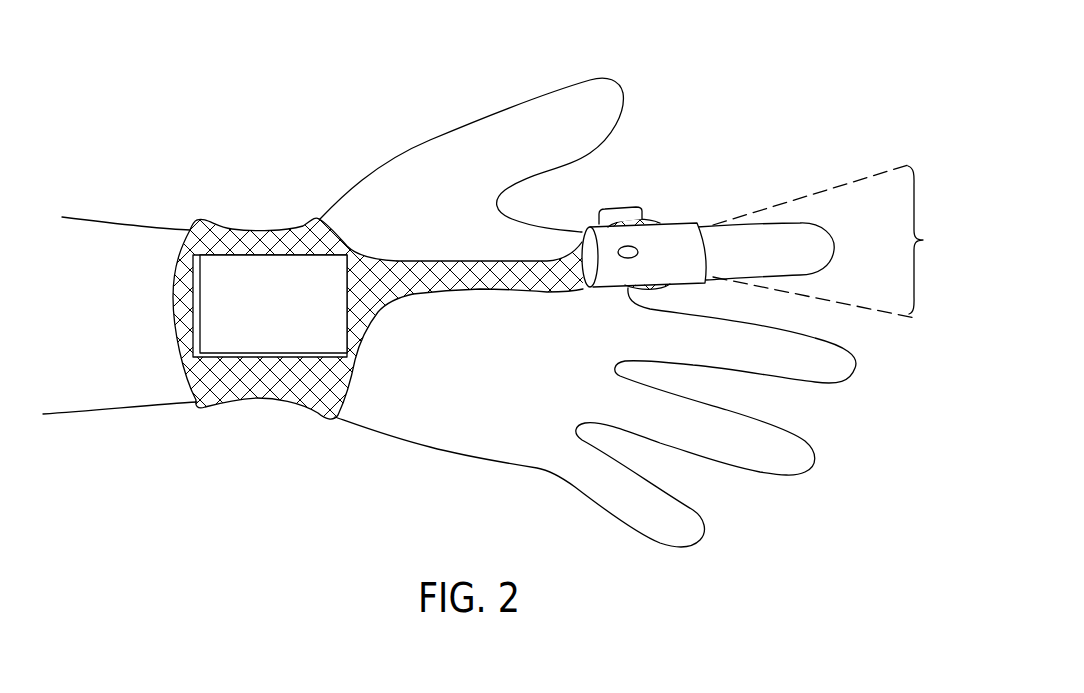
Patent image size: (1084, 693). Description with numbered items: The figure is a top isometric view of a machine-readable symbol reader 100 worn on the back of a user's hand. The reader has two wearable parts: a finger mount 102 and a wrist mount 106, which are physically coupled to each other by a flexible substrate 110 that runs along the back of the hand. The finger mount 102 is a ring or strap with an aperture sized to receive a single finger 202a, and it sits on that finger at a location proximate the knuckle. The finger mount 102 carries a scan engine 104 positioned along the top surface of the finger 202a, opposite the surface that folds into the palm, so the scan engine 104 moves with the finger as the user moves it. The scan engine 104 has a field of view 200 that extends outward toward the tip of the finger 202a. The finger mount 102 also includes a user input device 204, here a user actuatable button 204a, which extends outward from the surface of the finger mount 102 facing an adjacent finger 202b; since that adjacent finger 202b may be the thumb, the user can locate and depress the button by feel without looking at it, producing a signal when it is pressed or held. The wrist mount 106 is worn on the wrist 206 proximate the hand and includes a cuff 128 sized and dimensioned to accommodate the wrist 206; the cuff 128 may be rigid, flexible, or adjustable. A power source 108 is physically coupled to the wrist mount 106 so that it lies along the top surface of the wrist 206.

The machine-readable symbol reader 100 is at (501, 287).
The finger mount 102 is at (478, 287).
The scan engine 104 is at (679, 170).
The wrist mount 106 is at (262, 183).
The power source 108 is at (213, 280).
The flexible substrate 110 is at (429, 261).
The cuff 128 is at (228, 227).
The field of view 200 is at (836, 241).
The finger 202a is at (818, 250).
The adjacent finger 202b is at (593, 90).
The user input device 204 is at (644, 170).
The user actuatable button 204a is at (632, 206).
The wrist 206 is at (330, 217).